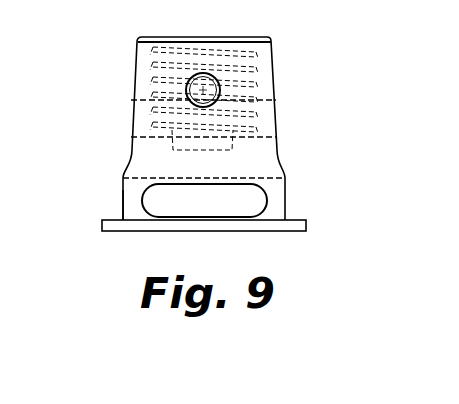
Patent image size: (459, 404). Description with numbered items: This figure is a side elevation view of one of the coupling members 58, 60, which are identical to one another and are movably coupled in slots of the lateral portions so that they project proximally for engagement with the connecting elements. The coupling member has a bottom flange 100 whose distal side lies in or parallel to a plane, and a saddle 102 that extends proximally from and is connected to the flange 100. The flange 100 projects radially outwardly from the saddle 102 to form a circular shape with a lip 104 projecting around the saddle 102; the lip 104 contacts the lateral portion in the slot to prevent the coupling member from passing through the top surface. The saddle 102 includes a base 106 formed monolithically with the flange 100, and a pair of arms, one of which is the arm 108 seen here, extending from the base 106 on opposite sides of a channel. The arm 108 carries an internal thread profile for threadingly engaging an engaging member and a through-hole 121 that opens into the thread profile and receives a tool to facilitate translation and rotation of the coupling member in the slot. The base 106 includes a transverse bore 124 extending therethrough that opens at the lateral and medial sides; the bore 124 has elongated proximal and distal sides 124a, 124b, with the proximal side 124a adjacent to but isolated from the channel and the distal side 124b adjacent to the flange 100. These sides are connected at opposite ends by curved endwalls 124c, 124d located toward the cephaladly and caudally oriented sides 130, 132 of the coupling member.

The coupling member 58 is at (211, 147).
The coupling member 60 is at (211, 147).
The bottom flange 100 is at (204, 147).
The saddle 102 is at (192, 134).
The lip 104 is at (306, 222).
The base 106 is at (124, 212).
The arm 108 is at (145, 68).
The through-hole 121 is at (203, 88).
The transverse bore 124 is at (192, 199).
The proximal side 124a is at (178, 183).
The distal side 124b is at (205, 219).
The curved endwall 124c is at (143, 196).
The curved endwall 124d is at (250, 198).
The cephaladly oriented side 130 is at (131, 110).
The caudally oriented side 132 is at (279, 120).